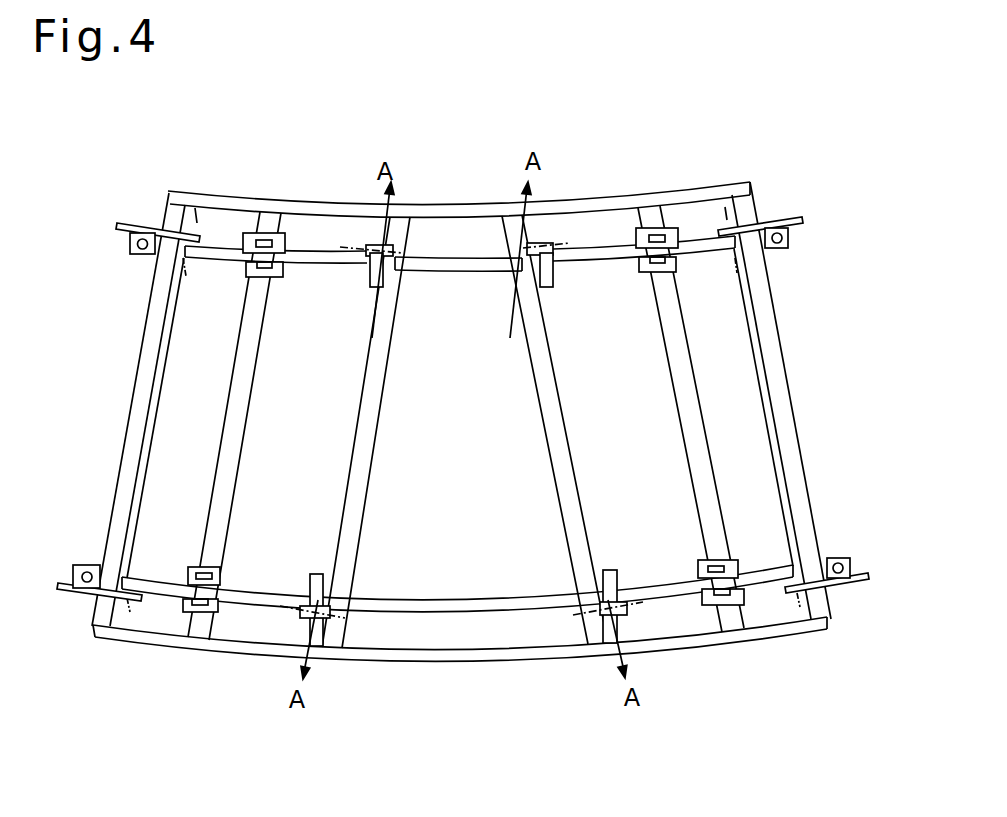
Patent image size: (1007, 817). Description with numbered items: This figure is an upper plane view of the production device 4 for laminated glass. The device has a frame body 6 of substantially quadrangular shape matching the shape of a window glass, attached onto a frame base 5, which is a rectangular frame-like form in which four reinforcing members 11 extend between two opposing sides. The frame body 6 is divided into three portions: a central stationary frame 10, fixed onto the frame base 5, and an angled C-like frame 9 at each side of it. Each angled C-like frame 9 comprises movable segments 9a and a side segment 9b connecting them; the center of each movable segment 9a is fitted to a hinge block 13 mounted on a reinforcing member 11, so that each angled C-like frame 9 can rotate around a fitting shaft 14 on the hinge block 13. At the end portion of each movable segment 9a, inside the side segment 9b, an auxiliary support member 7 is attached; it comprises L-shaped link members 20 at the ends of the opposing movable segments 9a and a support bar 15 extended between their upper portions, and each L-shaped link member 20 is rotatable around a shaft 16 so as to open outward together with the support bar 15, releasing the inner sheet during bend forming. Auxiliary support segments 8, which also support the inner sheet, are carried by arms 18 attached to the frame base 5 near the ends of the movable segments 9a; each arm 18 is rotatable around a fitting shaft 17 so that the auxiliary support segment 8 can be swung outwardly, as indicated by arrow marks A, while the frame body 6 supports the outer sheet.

The production device 4 is at (459, 175).
The frame base 5 is at (428, 204).
The frame body 6 is at (460, 255).
The auxiliary support member 7 is at (130, 222).
The auxiliary support segment 8 is at (370, 288).
The angled C-like frame 9 is at (148, 470).
The movable segment 9a is at (216, 260).
The side segment 9b is at (160, 374).
The stationary frame 10 is at (466, 613).
The reinforcing member 11 is at (247, 392).
The hinge block 13 is at (227, 602).
The fitting shaft 14 is at (206, 614).
The support bar 15 is at (127, 441).
The shaft 16 is at (197, 214).
The fitting shaft 17 is at (352, 246).
The arm 18 is at (320, 650).
The L-shaped link member 20 is at (143, 222).